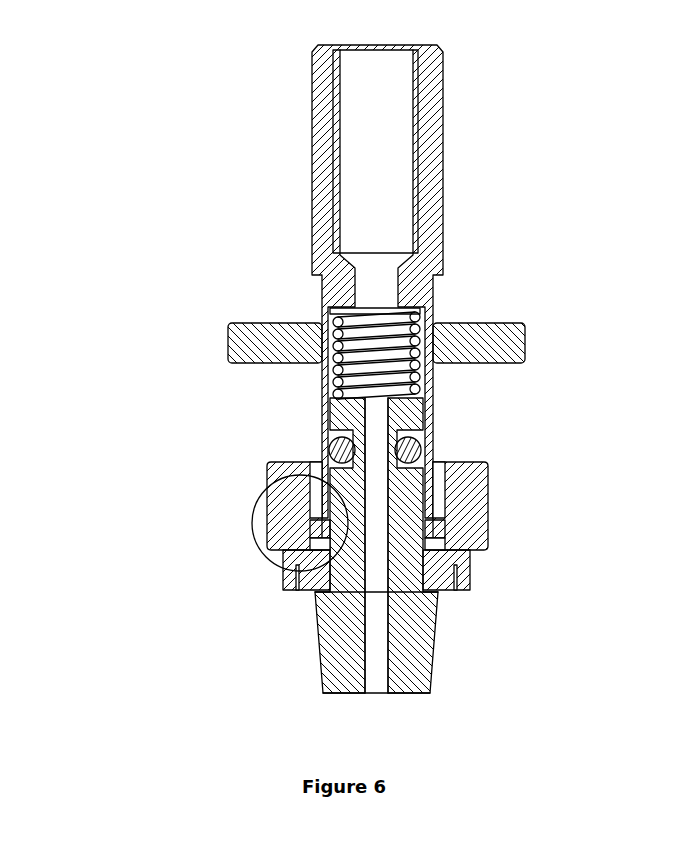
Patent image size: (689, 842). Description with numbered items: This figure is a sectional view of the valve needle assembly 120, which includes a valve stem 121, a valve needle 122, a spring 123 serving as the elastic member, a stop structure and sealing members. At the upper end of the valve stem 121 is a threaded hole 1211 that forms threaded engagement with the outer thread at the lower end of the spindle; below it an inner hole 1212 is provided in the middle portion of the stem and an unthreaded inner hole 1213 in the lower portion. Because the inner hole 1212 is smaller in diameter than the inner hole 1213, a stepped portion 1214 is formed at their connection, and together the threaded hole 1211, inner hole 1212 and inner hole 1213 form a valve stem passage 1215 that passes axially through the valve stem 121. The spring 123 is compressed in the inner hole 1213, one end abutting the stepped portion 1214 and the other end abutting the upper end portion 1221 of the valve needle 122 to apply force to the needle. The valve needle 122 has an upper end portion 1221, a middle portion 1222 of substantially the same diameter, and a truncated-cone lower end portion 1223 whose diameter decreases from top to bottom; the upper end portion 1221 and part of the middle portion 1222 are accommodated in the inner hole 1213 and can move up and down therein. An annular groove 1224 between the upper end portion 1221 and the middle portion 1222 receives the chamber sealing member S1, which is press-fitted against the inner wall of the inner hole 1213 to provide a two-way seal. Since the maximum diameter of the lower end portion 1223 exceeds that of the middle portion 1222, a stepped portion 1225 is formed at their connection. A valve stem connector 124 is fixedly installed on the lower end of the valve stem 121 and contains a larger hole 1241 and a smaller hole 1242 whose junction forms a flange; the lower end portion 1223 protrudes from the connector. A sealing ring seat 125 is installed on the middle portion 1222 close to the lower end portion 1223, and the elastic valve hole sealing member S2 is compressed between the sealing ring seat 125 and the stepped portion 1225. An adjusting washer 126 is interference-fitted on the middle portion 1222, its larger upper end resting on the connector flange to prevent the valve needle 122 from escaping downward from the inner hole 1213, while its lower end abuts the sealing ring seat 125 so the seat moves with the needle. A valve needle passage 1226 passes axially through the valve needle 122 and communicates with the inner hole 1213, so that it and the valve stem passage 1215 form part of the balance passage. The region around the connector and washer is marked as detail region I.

The valve needle assembly 120 is at (522, 90).
The valve stem 121 is at (335, 281).
The threaded hole 1211 is at (347, 102).
The inner hole 1212 is at (322, 278).
The inner hole 1213 is at (355, 357).
The stepped portion 1214 is at (400, 296).
The valve stem passage 1215 is at (317, 281).
The valve needle 122 is at (375, 545).
The upper end portion 1221 is at (430, 410).
The middle portion 1222 is at (447, 492).
The lower end portion 1223 is at (320, 618).
The annular groove 1224 is at (330, 433).
The stepped portion 1225 is at (292, 590).
The valve needle passage 1226 is at (375, 660).
The spring 123 is at (385, 347).
The valve stem connector 124 is at (377, 509).
The hole 1241 is at (318, 475).
The hole 1242 is at (310, 555).
The sealing ring seat 125 is at (377, 574).
The adjusting washer 126 is at (440, 533).
The chamber sealing member S1 is at (430, 440).
The valve hole sealing member S2 is at (445, 592).
The detail region I is at (255, 515).